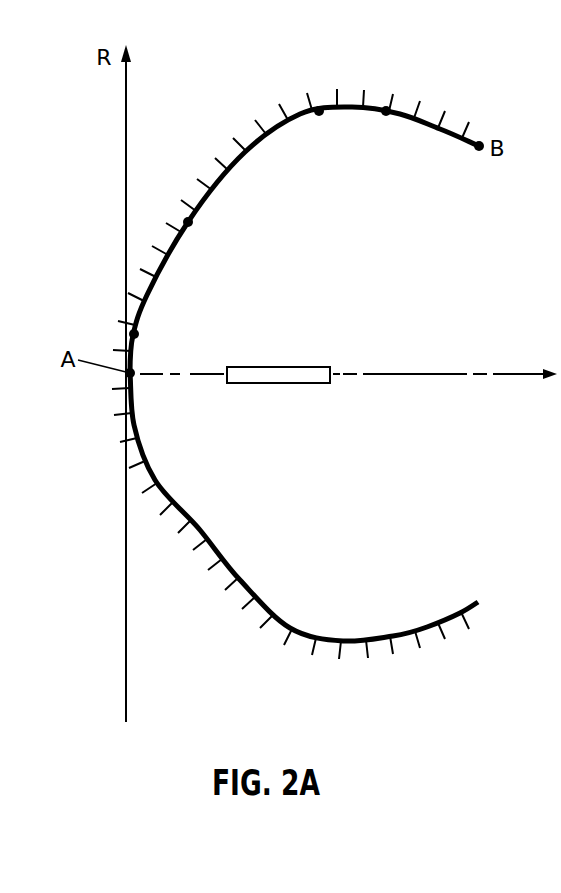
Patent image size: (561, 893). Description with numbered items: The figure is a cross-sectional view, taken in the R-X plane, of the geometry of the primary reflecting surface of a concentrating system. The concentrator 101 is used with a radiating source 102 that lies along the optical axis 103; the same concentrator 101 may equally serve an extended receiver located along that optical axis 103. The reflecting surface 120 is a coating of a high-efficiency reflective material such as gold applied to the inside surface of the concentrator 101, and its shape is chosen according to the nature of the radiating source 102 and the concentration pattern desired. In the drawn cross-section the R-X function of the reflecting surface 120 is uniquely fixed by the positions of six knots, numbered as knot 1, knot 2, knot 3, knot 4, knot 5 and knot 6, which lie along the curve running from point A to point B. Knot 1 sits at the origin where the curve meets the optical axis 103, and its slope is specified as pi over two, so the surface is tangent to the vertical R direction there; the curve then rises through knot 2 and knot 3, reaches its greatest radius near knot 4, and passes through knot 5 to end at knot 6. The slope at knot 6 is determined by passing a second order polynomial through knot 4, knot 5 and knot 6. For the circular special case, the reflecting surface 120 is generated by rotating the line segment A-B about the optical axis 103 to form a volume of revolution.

The concentrator 101 is at (245, 133).
The radiating source 102 is at (289, 381).
The optical axis 103 is at (394, 380).
The reflecting surface 120 is at (355, 638).
The knot number 1 is at (137, 364).
The knot number 2 is at (142, 336).
The knot number 3 is at (198, 232).
The knot number 4 is at (320, 126).
The knot number 5 is at (386, 126).
The knot number 6 is at (478, 162).